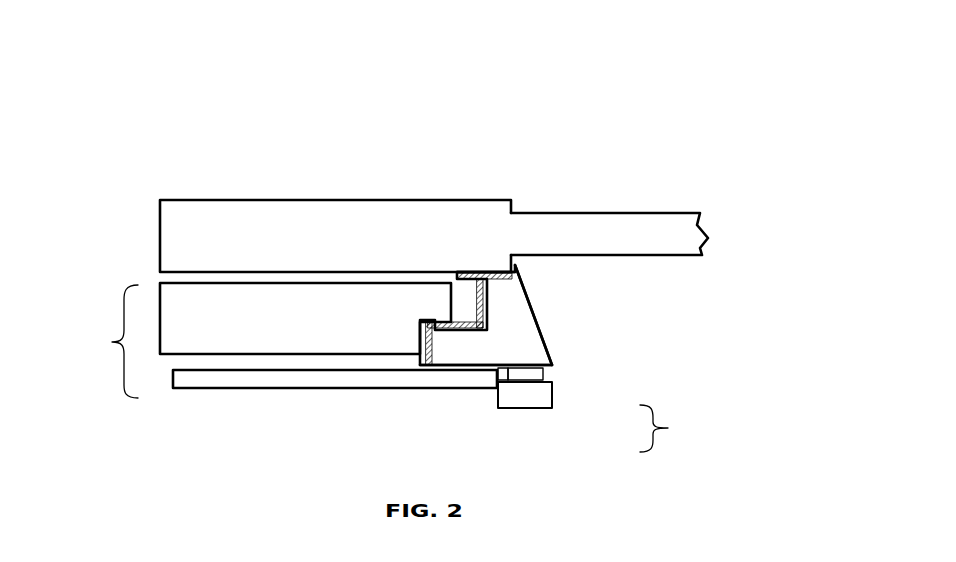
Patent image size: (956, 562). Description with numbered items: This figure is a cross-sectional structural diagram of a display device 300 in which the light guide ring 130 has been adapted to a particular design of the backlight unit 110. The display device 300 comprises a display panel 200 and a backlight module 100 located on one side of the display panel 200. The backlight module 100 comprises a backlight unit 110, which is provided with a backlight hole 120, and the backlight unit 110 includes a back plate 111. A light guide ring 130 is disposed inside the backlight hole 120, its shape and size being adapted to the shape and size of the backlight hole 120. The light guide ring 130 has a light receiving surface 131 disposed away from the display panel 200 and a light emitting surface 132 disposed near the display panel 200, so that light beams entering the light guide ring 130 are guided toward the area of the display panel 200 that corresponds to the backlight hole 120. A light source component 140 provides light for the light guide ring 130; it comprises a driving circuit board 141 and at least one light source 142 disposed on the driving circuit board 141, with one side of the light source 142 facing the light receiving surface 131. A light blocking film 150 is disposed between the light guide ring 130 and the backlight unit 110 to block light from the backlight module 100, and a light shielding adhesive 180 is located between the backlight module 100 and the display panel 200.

The display device 300 is at (233, 78).
The display panel 200 is at (183, 217).
The backlight hole 120 is at (663, 287).
The backlight unit 110 is at (178, 302).
The backlight module 100 is at (103, 341).
The back plate 111 is at (303, 377).
The light guide ring 130 is at (483, 340).
The light blocking film 150 is at (475, 298).
The light shielding adhesive 180 is at (497, 277).
The light emitting surface 132 is at (536, 305).
The light receiving surface 131 is at (530, 361).
The light source 142 is at (530, 372).
The driving circuit board 141 is at (530, 398).
The light source component 140 is at (673, 428).